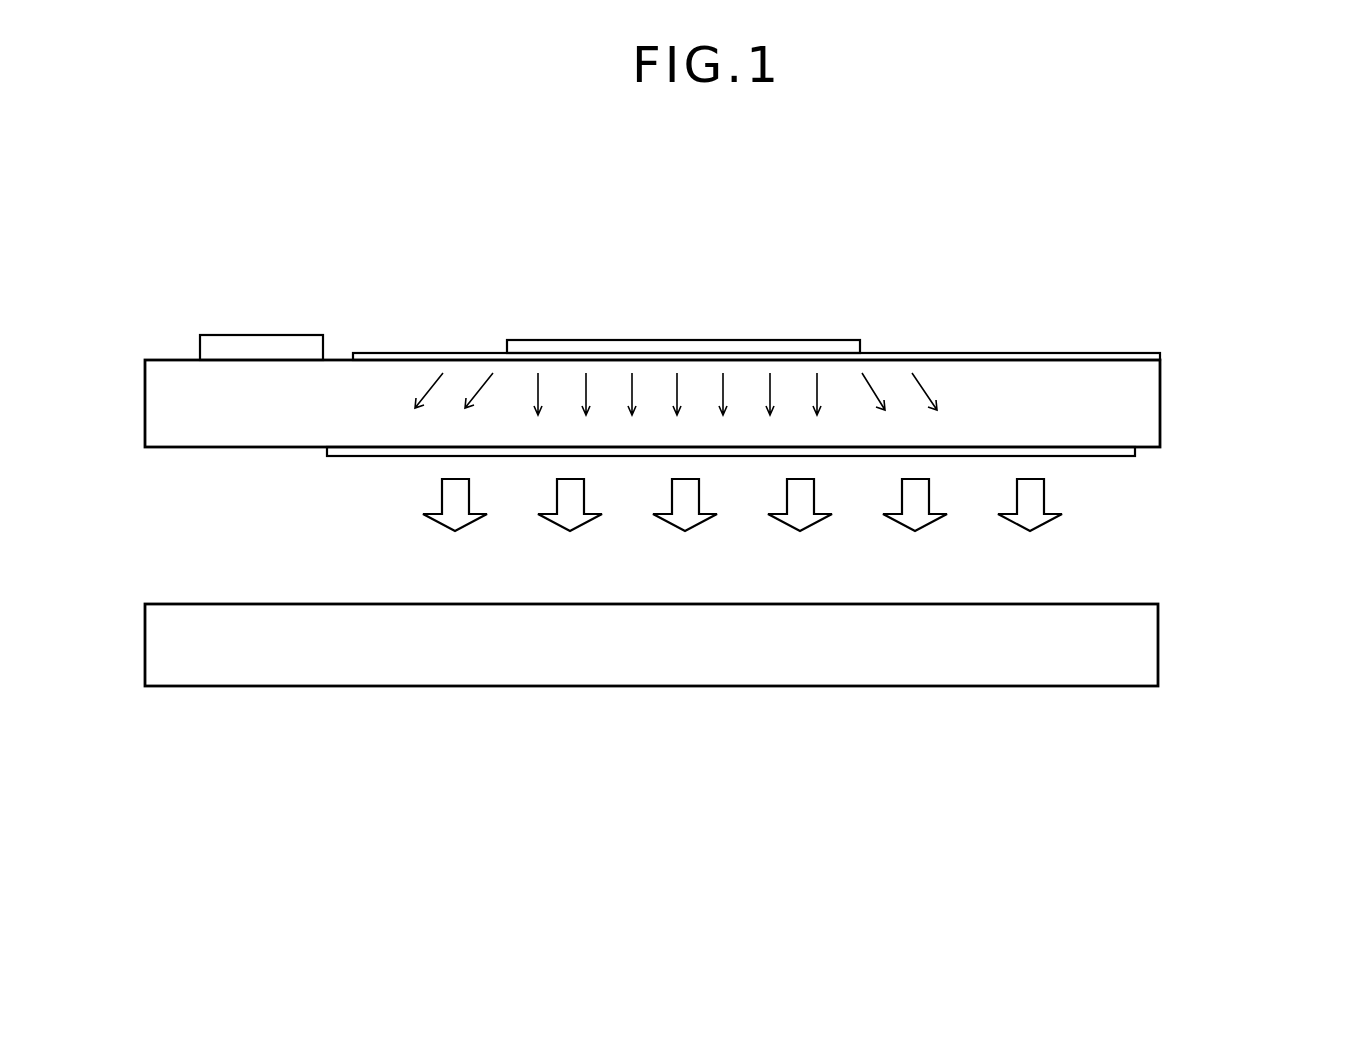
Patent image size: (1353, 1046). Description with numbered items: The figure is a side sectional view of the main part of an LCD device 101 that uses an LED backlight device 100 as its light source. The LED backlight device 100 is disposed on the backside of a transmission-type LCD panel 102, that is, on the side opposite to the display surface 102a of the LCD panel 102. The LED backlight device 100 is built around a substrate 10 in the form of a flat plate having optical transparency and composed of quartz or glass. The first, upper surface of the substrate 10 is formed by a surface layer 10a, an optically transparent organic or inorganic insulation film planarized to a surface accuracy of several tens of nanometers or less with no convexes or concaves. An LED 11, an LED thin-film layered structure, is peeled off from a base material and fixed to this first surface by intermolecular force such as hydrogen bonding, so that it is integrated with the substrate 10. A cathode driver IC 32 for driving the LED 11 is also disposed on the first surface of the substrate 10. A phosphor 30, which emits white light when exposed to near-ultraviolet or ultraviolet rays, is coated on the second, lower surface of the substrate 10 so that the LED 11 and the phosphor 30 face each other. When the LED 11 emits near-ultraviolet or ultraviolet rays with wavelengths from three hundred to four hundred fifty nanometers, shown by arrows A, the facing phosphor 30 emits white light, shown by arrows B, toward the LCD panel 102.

The substrate 10 is at (1160, 389).
The surface layer 10a is at (1040, 353).
The LED 11 is at (664, 340).
The cathode driver IC 32 is at (265, 345).
The phosphor 30 is at (354, 456).
The arrows A is at (935, 390).
The arrows B is at (1044, 496).
The LED backlight device 100 is at (1187, 455).
The LCD panel 102 is at (1158, 645).
The display surface 102a is at (443, 686).
The LCD device 101 is at (1192, 708).